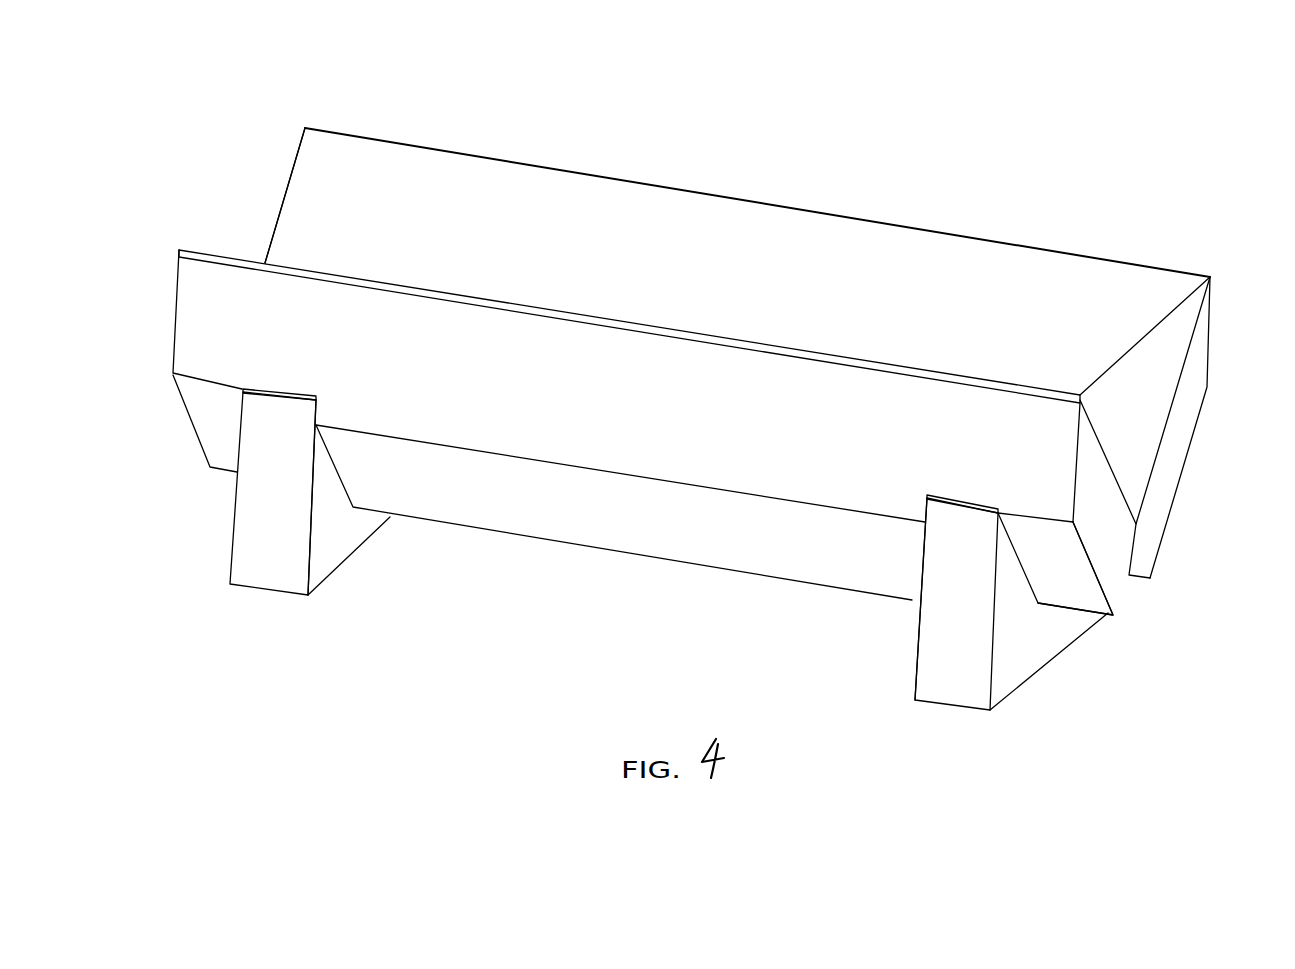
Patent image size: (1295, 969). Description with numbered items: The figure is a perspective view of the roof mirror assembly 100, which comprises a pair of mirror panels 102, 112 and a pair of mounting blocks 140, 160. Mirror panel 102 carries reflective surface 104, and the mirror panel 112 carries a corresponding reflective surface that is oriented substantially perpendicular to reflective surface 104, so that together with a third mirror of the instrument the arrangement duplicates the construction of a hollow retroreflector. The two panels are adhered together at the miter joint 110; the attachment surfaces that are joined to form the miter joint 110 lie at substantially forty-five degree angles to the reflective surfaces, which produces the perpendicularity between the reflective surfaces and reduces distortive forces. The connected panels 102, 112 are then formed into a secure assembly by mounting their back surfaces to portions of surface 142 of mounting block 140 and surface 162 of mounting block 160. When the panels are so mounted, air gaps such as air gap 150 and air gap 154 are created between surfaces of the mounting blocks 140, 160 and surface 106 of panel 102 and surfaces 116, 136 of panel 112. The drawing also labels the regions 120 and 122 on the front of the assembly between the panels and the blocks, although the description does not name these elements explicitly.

The roof mirror assembly 100 is at (683, 402).
The mirror panel 102 is at (293, 160).
The reflective surface 104 is at (787, 255).
The surface of panel 106 is at (1181, 503).
The miter joint 110 is at (1144, 536).
The mirror panel 112 is at (168, 327).
The surface of panel 116 is at (1065, 594).
The lower inclined panel 120 is at (527, 508).
The front panel 122 is at (658, 447).
The surface of panel 136 is at (223, 443).
The mounting block 140 is at (965, 468).
The surface of mounting block 142 is at (910, 670).
The air gap 150 is at (972, 504).
The air gap 154 is at (278, 390).
The mounting block 160 is at (315, 409).
The surface of mounting block 162 is at (342, 535).